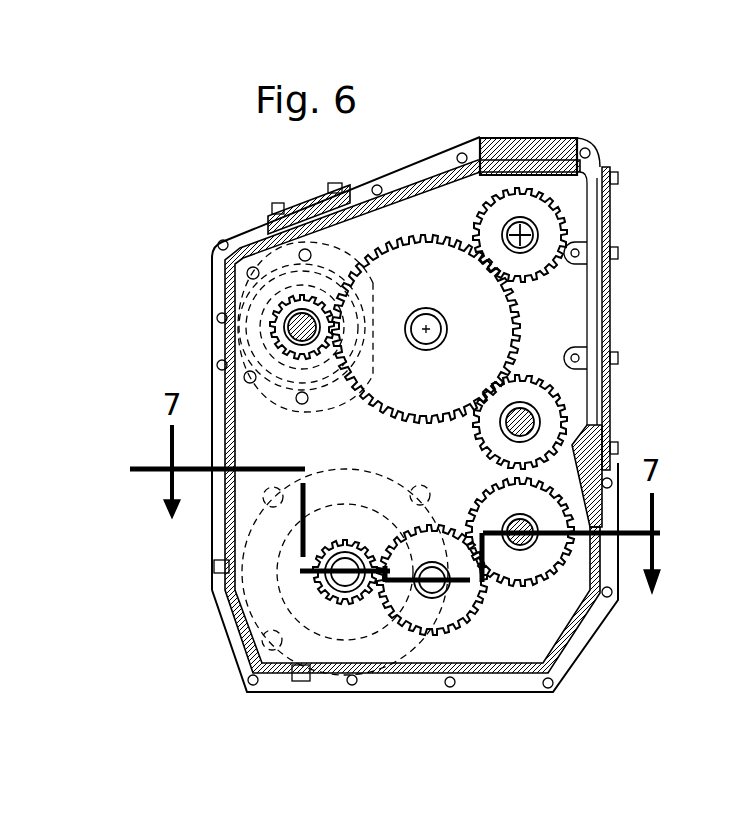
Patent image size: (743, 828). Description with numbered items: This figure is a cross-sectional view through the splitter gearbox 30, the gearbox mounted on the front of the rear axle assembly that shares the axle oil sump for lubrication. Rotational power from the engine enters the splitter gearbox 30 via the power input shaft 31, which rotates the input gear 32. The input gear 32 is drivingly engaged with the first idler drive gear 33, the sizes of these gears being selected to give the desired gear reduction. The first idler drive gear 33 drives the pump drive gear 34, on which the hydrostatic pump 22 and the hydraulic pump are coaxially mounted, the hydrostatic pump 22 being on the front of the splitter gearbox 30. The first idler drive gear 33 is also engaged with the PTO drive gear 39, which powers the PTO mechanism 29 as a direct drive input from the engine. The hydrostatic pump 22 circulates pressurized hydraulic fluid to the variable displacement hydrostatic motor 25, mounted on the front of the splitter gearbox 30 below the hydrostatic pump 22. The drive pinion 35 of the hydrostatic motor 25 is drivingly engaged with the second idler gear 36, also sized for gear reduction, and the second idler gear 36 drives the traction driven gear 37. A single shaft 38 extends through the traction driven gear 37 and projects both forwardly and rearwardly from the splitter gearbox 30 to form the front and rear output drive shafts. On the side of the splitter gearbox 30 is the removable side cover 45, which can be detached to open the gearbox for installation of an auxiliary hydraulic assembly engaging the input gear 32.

The splitter gearbox 30 is at (530, 82).
The power input shaft 31 is at (540, 232).
The input gear 32 is at (548, 198).
The first idler drive gear 33 is at (522, 328).
The pump drive gear 34 is at (278, 311).
The PTO drive gear 39 is at (552, 386).
The power takeoff (PTO) mechanism 29 is at (540, 422).
The removable side cover 45 is at (612, 273).
The traction driven gear 37 is at (530, 580).
The single shaft 38 is at (512, 517).
The second idler gear 36 is at (390, 633).
The drive pinion 35 is at (347, 603).
The hydrostatic pump 22 is at (322, 415).
The variable displacement hydrostatic motor 25 is at (290, 603).